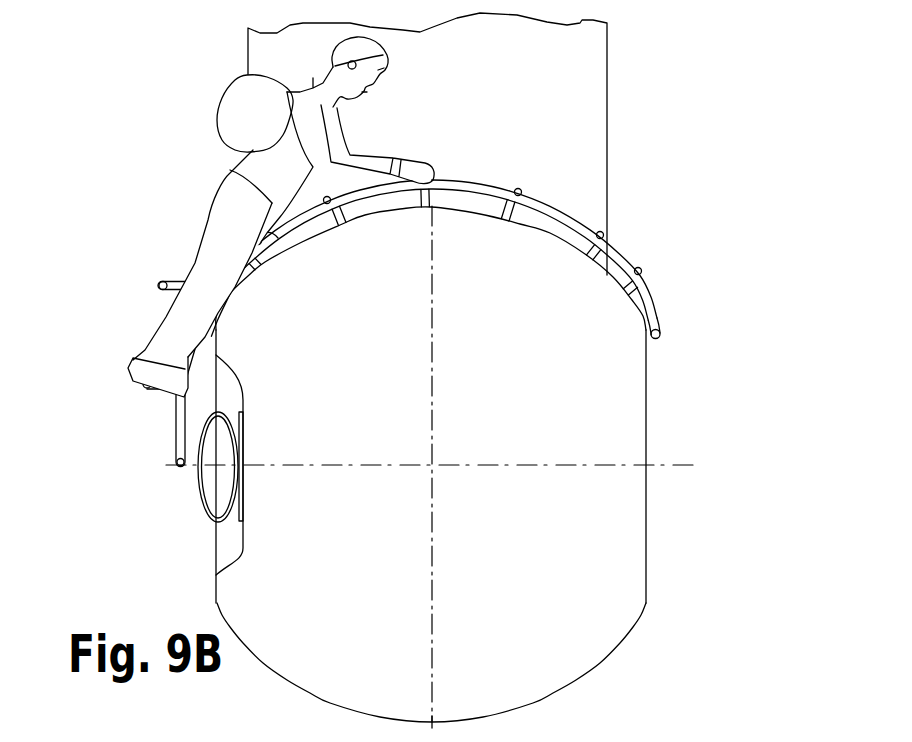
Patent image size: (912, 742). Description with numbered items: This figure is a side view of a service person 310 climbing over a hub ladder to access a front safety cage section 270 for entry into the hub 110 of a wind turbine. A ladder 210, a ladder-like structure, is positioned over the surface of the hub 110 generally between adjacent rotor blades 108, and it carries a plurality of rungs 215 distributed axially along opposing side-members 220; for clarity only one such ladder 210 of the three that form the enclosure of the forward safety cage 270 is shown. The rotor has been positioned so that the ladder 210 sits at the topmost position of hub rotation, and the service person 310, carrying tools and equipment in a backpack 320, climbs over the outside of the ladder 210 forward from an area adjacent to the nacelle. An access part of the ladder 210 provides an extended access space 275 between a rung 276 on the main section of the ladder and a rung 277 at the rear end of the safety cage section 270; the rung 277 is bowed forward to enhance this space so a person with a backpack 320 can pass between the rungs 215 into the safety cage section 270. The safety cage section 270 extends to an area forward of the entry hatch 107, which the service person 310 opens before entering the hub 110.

The entry hatch 107 is at (200, 492).
The rotor blade 108 is at (570, 100).
The hub 110 is at (573, 680).
The ladder 210 is at (662, 233).
The rungs 215 is at (601, 232).
The side-member 220 is at (675, 288).
The safety cage section 270 is at (140, 423).
The extended access space 275 is at (178, 281).
The rung 276 is at (266, 244).
The rung 277 is at (138, 287).
The service person 310 is at (281, 217).
The backpack 320 is at (250, 116).